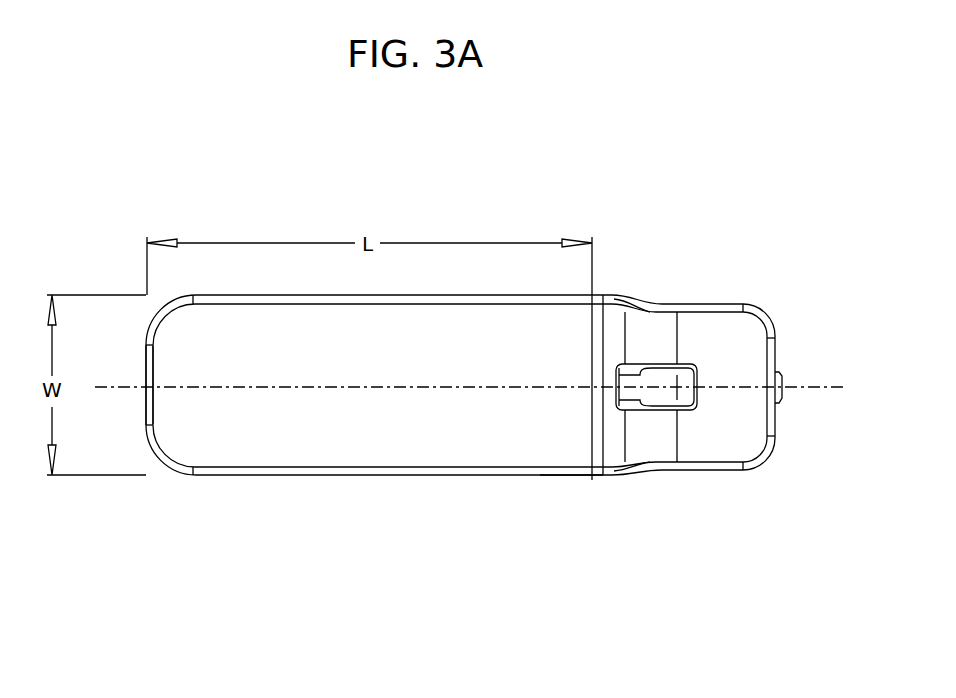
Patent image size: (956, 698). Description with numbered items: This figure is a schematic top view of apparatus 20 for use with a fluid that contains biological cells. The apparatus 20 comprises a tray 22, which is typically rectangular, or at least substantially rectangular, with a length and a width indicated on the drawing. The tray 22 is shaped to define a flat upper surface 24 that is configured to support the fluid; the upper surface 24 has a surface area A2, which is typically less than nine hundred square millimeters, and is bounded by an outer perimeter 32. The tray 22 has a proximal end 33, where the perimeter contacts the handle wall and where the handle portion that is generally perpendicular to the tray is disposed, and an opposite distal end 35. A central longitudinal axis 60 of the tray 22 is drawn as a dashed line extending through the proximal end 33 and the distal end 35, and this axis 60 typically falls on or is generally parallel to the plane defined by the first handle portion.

The apparatus 20 is at (183, 190).
The tray 22 is at (594, 517).
The upper surface 24 is at (360, 369).
The surface area A2 is at (470, 369).
The outer perimeter 32 is at (593, 501).
The proximal end 33 is at (621, 326).
The distal end 35 is at (127, 427).
The central longitudinal axis 60 is at (728, 364).